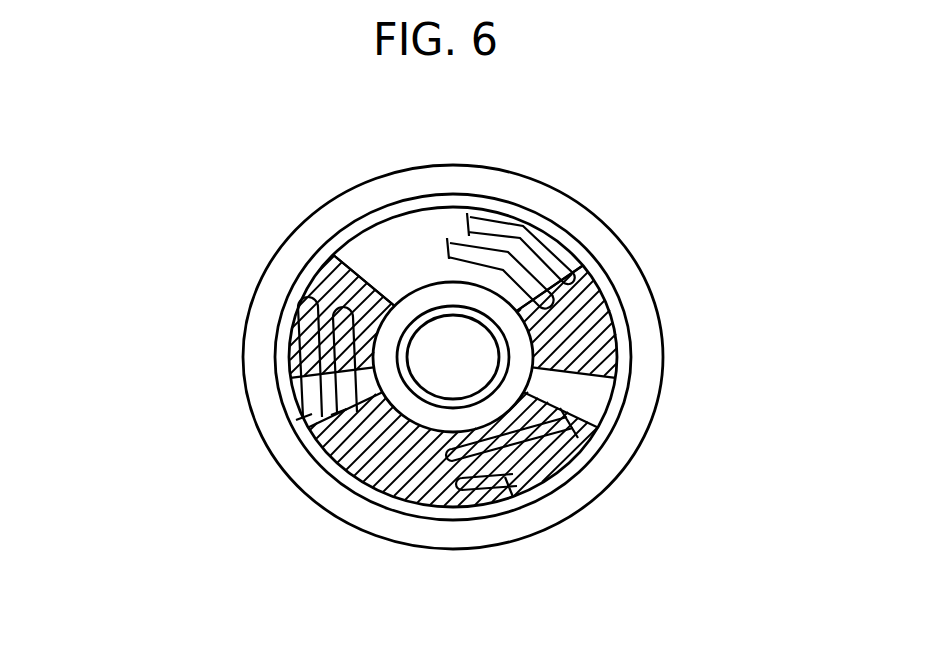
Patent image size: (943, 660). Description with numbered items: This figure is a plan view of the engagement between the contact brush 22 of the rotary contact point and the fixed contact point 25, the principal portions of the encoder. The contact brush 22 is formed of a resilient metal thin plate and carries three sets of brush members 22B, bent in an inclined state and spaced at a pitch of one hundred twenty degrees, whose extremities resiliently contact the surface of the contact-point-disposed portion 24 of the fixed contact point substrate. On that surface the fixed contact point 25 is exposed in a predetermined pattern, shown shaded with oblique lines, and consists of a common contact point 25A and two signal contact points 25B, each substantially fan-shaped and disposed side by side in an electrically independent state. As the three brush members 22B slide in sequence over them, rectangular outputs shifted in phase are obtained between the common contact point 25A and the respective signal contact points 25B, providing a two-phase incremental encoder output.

The contact-point-disposed portion 24 is at (388, 245).
The signal contact point 25B is at (327, 278).
The common contact point 25A is at (397, 502).
The fixed contact point 25 is at (493, 401).
The brush member 22B is at (535, 250).
The contact brush 22 is at (395, 389).